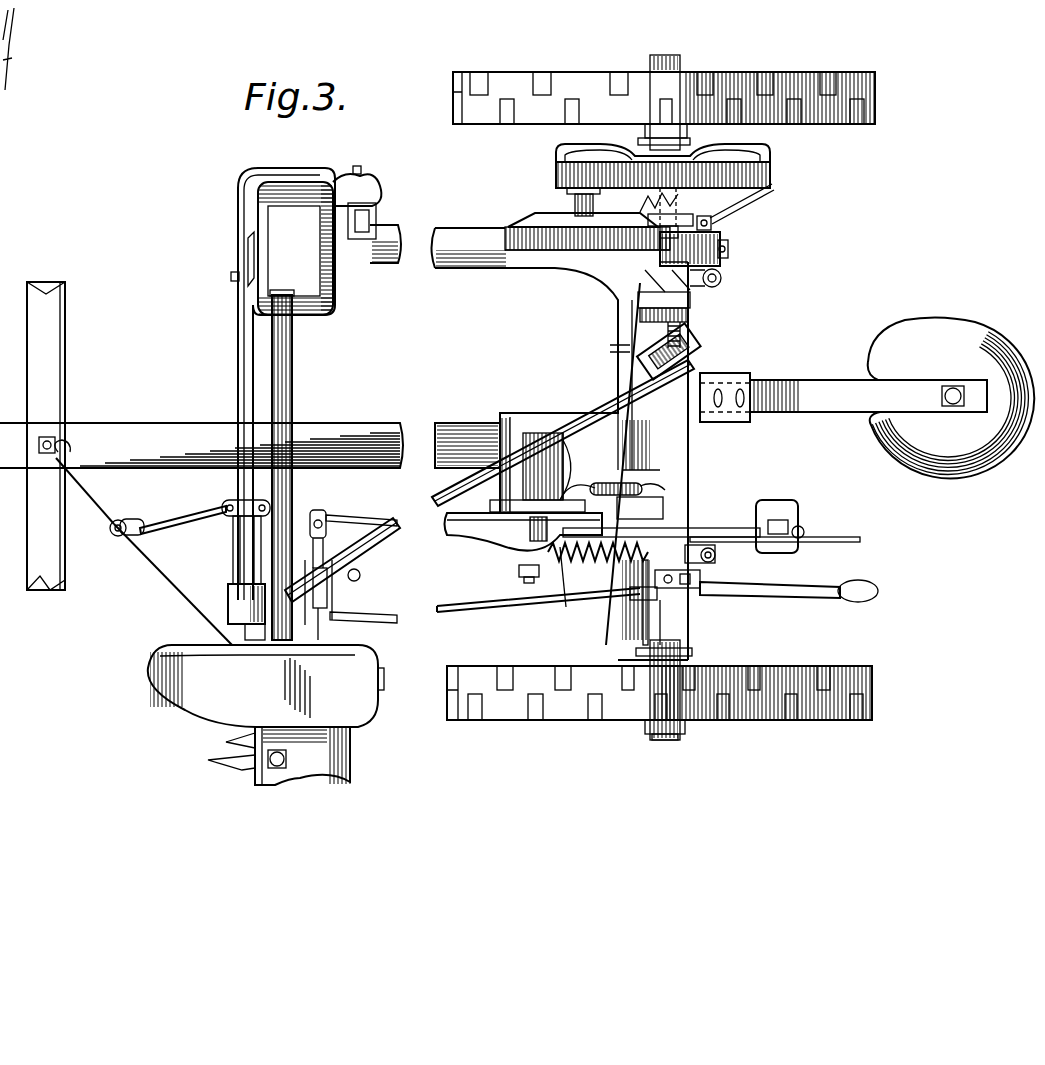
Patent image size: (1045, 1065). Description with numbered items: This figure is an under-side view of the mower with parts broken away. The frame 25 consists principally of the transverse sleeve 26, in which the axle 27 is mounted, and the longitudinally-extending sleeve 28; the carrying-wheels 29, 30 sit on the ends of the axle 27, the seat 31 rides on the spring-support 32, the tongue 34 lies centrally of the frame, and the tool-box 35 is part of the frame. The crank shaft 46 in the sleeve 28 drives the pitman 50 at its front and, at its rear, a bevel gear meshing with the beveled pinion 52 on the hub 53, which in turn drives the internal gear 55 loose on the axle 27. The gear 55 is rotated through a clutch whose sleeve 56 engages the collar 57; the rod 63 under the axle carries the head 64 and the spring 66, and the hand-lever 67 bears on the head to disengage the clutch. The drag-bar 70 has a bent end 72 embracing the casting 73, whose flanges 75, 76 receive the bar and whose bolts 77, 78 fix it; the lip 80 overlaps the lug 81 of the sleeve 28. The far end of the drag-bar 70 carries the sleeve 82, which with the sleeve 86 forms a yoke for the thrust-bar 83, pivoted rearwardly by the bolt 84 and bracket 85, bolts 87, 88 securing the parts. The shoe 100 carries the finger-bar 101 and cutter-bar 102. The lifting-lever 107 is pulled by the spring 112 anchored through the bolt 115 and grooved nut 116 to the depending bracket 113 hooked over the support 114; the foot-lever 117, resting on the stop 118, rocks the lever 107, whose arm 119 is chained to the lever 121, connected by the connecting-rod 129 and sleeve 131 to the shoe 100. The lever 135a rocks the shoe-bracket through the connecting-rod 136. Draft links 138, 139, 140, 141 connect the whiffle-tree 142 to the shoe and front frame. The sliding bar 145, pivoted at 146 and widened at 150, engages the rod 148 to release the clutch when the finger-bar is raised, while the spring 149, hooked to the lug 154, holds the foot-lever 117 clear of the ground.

The frame 25 is at (625, 268).
The transverse sleeve 26 is at (662, 622).
The axle 27 is at (660, 56).
The longitudinally-extending sleeve 28 is at (470, 248).
The carrying-wheel 29 is at (782, 680).
The carrying-wheel 30 is at (800, 80).
The seat 31 is at (922, 335).
The spring-support 32 is at (800, 388).
The tongue 34 is at (152, 440).
The tool-box 35 is at (628, 318).
The crank shaft 46 is at (728, 250).
The pitman 50 is at (292, 402).
The beveled pinion 52 is at (565, 220).
The short sleeve or hub 53 is at (575, 201).
The internal gear 55 is at (770, 172).
The sleeve 56 is at (640, 192).
The clutch collar 57 is at (686, 206).
The rod 63 is at (716, 226).
The head 64 is at (690, 300).
The spring 66 is at (682, 336).
The hand-lever 67 is at (722, 278).
The drag-bar 70 is at (236, 332).
The angularly-disposed end portion of drag-bar 72 is at (298, 172).
The casting 73 is at (300, 262).
The flange 75 is at (246, 258).
The flange 76 is at (355, 178).
The bolt 77 is at (230, 278).
The bolt 78 is at (362, 172).
The overhanging lip 80 is at (376, 210).
The lug 81 is at (380, 228).
The sleeve 82 is at (238, 576).
The thrust-bar 83 is at (585, 412).
The bolt 84 is at (628, 345).
The bracket 85 is at (690, 356).
The sleeve 86 is at (370, 556).
The bolt 87 is at (360, 577).
The bolt 88 is at (266, 505).
The shoe 100 is at (180, 684).
The finger-bar 101 is at (352, 772).
The cutter-bar 102 is at (225, 742).
The lifting-lever 107 is at (495, 528).
The spring 112 is at (625, 598).
The depending bracket 113 is at (705, 568).
The support 114 is at (805, 533).
The bolt 115 is at (716, 556).
The spirally-grooved nut 116 is at (645, 595).
The foot-lever 117 is at (680, 528).
The stop 118 is at (595, 558).
The forwardly-projecting arm 119 is at (385, 518).
The lever 121 is at (330, 520).
The connecting-rod 129 is at (340, 640).
The sleeve 131 is at (328, 596).
The lever 135a is at (790, 600).
The connecting-rod 136 is at (500, 612).
The link 138 is at (95, 510).
The link 139 is at (170, 590).
The link 140 is at (185, 527).
The link 141 is at (140, 523).
The whiffle-tree 142 is at (60, 400).
The sliding bar 145 is at (598, 485).
The pivot 146 is at (566, 602).
The rod 148 is at (655, 453).
The spring 149 is at (535, 525).
The widened rear end of sliding bar 150 is at (640, 510).
The lug 154 is at (522, 570).